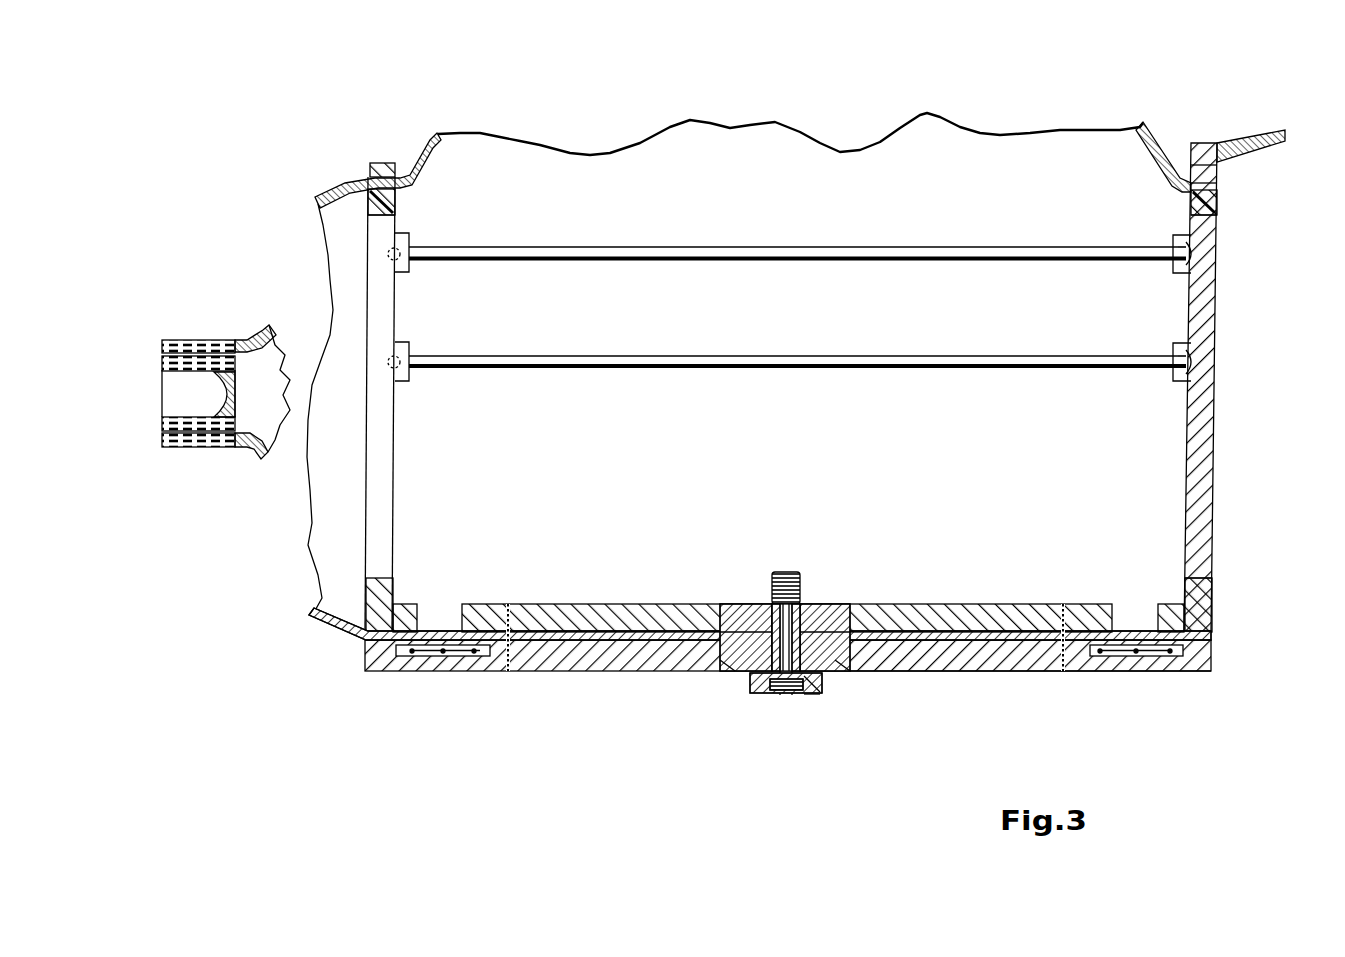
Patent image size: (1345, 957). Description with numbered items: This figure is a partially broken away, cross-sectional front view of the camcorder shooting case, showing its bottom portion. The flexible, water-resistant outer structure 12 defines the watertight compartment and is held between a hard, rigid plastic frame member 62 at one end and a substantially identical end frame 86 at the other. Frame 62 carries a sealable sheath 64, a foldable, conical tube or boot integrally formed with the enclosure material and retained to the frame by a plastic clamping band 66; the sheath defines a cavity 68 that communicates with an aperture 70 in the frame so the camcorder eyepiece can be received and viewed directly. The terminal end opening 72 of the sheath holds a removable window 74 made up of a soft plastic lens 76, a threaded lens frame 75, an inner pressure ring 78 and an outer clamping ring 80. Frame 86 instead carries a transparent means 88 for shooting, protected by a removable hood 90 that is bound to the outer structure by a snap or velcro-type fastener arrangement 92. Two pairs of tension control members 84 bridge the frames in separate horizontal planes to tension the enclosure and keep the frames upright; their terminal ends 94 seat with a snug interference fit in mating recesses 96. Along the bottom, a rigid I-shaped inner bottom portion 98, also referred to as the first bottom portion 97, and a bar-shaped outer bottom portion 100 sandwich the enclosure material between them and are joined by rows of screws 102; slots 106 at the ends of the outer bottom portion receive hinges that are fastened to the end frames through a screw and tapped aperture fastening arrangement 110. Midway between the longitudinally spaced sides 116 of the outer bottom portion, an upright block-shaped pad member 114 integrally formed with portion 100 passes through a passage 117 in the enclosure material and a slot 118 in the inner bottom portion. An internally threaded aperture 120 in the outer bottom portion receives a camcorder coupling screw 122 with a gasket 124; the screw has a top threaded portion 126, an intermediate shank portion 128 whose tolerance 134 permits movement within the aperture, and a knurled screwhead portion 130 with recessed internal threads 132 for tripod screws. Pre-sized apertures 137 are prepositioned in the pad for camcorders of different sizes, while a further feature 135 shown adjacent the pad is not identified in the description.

The outer structure 12 is at (433, 632).
The frame member 62 is at (369, 258).
The sheath 64 is at (263, 452).
The clamping band 66 is at (382, 162).
The cavity 68 is at (272, 396).
The aperture 70 is at (369, 229).
The terminal end opening 72 is at (150, 395).
The window 74 is at (163, 357).
The threaded lens frame 75 is at (215, 413).
The lens 76 is at (235, 410).
The inner pressure ring 78 is at (165, 430).
The outer clamping ring 80 is at (210, 340).
The tension control members 84 is at (822, 237).
The end frame 86 is at (1190, 201).
The transparent means 88 is at (1195, 322).
The hood 90 is at (1261, 136).
The fastener arrangement 92 is at (1217, 164).
The terminal ends 94 is at (422, 262).
The recesses 96 is at (1217, 245).
The first bottom portion 97 is at (410, 236).
The inner bottom portion 98 is at (930, 604).
The outer bottom portion 100 is at (988, 671).
The screws 102 is at (508, 671).
The slots 106 is at (403, 671).
The fastening arrangement 110 is at (405, 603).
The pad member 114 is at (725, 603).
The longitudinally spaced sides 116 is at (365, 647).
The passage 117 is at (827, 603).
The slot 118 is at (685, 603).
The internally threaded aperture 120 is at (853, 672).
The camcorder coupling screw 122 is at (812, 712).
The gasket 124 is at (822, 680).
The top threaded portion 126 is at (795, 600).
The shank portion 128 is at (745, 673).
The screwhead portion 130 is at (765, 697).
The recessed internal threads 132 is at (785, 697).
The tolerance 134 is at (768, 603).
The right block top 135 is at (850, 603).
The pre-sized apertures 137 is at (700, 671).